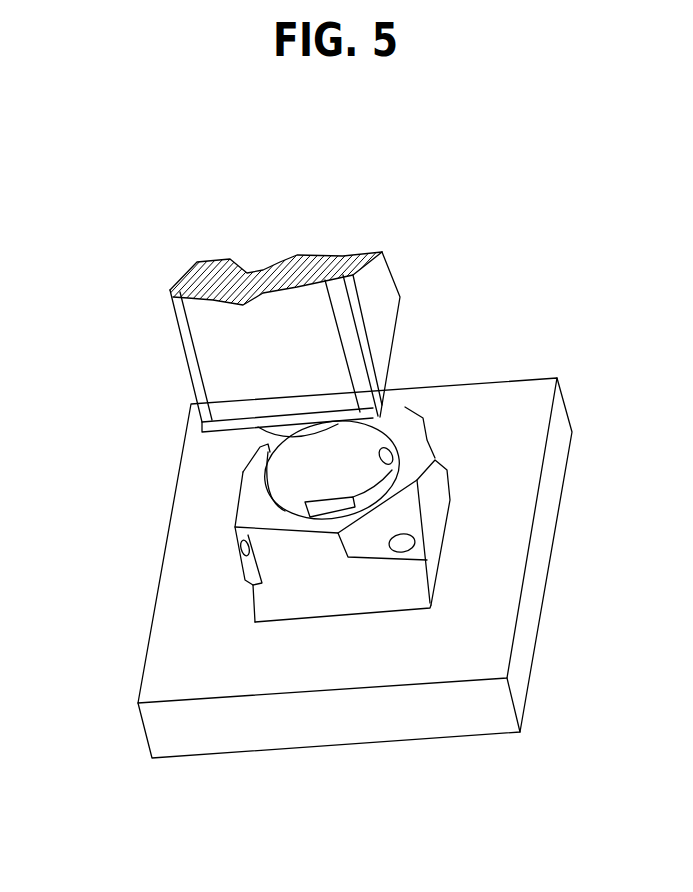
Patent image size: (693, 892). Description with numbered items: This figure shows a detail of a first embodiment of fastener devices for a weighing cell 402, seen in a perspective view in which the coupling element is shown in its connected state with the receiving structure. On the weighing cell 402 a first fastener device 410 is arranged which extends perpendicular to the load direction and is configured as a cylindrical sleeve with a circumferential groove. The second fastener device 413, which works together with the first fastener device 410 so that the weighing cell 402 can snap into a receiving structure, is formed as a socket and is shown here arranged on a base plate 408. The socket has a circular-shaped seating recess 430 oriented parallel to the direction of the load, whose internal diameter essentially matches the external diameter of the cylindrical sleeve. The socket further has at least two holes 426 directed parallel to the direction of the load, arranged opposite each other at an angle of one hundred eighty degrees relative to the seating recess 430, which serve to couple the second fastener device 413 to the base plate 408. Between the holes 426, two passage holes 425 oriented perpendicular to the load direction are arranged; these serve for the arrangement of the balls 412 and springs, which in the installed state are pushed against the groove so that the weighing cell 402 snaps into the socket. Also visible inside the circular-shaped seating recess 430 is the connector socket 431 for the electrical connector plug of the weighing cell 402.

The weighing cell 402 is at (359, 507).
The base plate 408 is at (487, 503).
The first fastener device 410 is at (252, 440).
The balls 412 is at (359, 571).
The second fastener device 413 is at (308, 582).
The passage holes 425 is at (245, 550).
The holes 426 is at (402, 543).
The circular-shaped seating recess 430 is at (340, 470).
The connector socket 431 is at (300, 509).